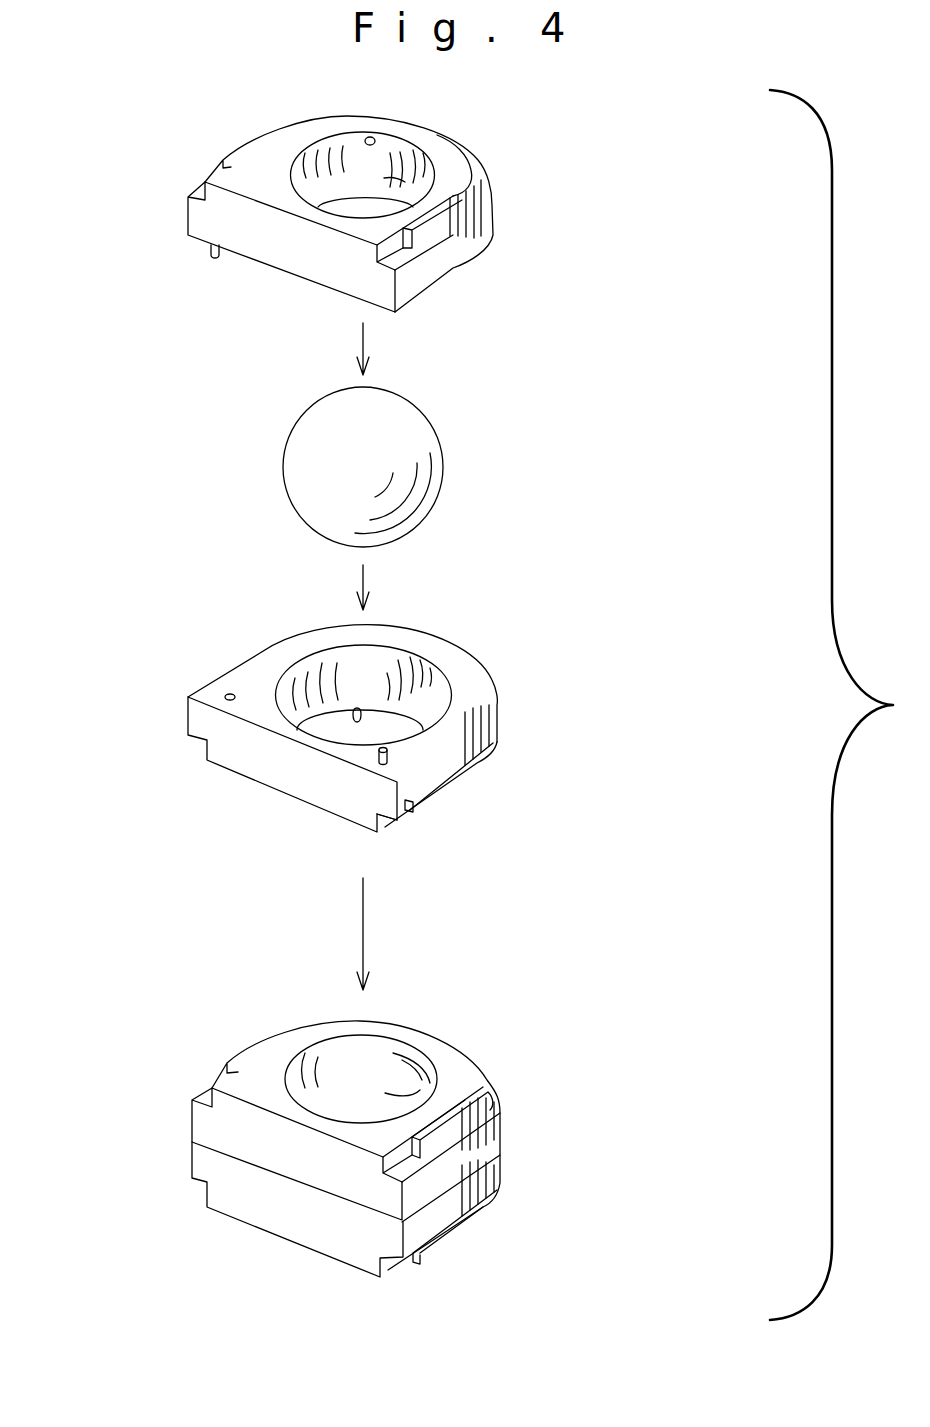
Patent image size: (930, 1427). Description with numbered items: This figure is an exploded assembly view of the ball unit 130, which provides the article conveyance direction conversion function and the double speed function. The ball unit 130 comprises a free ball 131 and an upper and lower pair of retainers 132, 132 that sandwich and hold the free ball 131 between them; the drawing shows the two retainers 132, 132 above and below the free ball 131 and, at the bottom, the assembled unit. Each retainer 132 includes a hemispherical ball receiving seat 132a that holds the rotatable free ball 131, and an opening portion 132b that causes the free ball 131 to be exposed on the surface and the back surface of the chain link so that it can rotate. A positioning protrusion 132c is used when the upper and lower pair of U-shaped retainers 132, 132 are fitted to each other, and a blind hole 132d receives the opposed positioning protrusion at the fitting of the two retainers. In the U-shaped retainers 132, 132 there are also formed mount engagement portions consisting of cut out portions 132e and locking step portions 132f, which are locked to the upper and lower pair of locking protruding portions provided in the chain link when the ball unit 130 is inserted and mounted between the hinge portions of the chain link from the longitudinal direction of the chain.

The ball unit 130 is at (660, 985).
The free ball 131 is at (443, 450).
The retainer 132 is at (640, 100).
The hemispherical ball receiving seat 132a is at (380, 178).
The opening portion 132b is at (373, 138).
The positioning protrusion 132c is at (208, 256).
The blind hole 132d is at (229, 693).
The cut out portion 132e is at (395, 258).
The locking step portion 132f is at (438, 218).